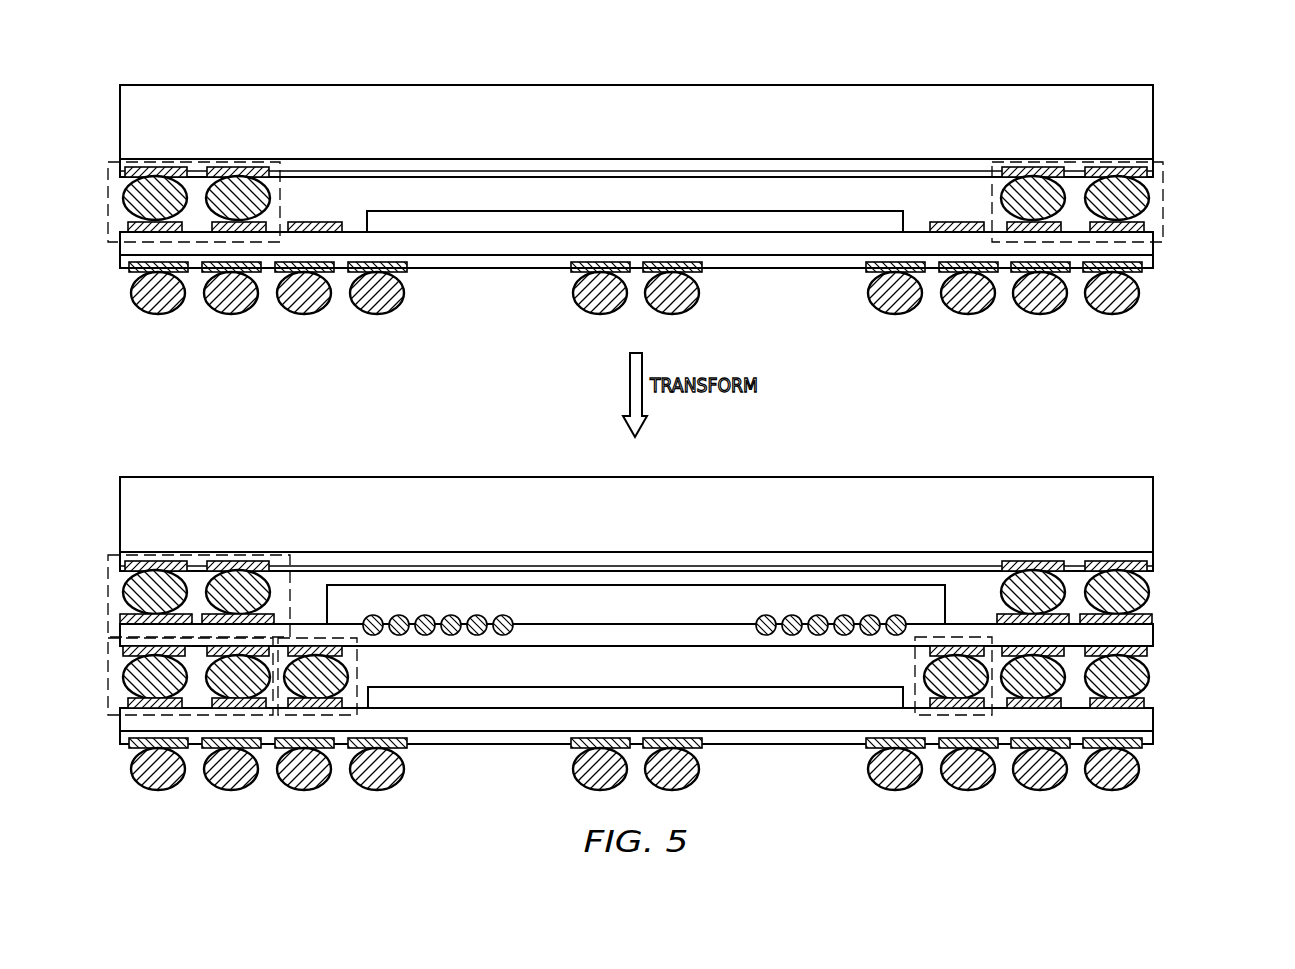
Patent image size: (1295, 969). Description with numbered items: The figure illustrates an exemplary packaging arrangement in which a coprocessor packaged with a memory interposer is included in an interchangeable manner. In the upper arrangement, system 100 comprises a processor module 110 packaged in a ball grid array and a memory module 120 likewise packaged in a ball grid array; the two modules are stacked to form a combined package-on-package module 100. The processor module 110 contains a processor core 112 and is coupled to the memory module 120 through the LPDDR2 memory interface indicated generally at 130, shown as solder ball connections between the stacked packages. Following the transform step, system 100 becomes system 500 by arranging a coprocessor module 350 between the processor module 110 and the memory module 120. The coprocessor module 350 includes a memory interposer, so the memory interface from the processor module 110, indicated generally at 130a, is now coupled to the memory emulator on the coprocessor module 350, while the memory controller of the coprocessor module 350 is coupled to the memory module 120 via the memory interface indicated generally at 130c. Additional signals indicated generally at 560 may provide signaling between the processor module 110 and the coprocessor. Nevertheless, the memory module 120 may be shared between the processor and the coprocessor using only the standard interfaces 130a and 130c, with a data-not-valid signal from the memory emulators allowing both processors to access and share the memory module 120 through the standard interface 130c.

The system 100 is at (1220, 138).
The processor module 110 is at (120, 243).
The processor core 112 is at (470, 222).
The memory module 120 is at (832, 93).
The memory interface 130 is at (108, 200).
The memory interface 130a is at (107, 675).
The memory interface 130c is at (107, 593).
The coprocessor module 350 is at (1145, 637).
The system 500 is at (1220, 573).
The additional signals 560 is at (718, 595).